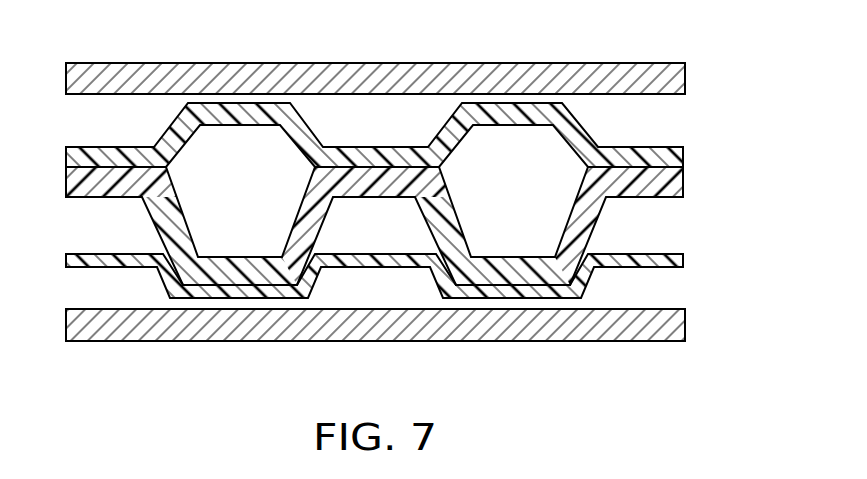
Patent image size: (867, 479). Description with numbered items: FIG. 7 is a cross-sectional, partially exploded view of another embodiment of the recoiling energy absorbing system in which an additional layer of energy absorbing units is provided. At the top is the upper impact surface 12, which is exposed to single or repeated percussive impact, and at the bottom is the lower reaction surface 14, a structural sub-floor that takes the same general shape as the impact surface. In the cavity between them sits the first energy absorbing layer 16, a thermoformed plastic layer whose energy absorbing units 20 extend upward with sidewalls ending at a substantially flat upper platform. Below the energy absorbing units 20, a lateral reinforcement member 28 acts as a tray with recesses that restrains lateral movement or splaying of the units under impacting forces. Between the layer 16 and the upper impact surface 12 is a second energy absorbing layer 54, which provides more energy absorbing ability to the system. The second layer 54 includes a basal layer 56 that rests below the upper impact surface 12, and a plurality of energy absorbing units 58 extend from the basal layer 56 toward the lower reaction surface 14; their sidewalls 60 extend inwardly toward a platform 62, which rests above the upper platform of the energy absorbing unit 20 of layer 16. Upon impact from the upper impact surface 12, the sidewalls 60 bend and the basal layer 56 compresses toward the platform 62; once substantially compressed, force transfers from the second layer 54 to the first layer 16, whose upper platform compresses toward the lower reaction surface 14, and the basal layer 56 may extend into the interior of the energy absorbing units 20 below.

The upper impact surface 12 is at (685, 80).
The lower reaction surface 14 is at (570, 341).
The energy absorbing layer 16 is at (700, 170).
The energy absorbing unit 20 is at (307, 350).
The lateral reinforcement member 28 is at (118, 252).
The second energy absorbing layer 54 is at (700, 100).
The basal layer 56 is at (253, 103).
The energy absorbing unit 58 is at (298, 50).
The sidewall 60 is at (157, 148).
The platform 62 is at (112, 157).